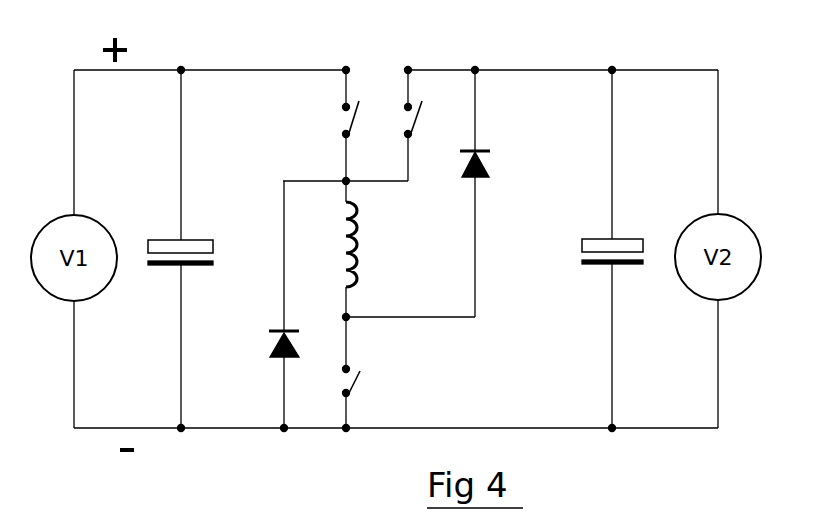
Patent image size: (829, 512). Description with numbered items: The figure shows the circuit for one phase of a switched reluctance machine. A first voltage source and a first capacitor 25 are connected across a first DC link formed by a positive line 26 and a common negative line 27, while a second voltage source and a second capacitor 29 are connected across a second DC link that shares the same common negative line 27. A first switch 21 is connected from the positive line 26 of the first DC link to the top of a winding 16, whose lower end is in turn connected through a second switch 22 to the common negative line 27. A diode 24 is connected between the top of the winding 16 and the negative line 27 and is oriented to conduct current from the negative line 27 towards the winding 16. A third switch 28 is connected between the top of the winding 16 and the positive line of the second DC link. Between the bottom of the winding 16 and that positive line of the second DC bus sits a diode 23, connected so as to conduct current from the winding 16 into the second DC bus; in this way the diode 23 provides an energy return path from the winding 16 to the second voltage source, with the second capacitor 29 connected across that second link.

The winding 16 is at (363, 224).
The first switch 21 is at (342, 125).
The second switch 22 is at (362, 378).
The diode 23 is at (493, 158).
The diode 24 is at (270, 338).
The first capacitor 25 is at (206, 240).
The positive line 26 is at (260, 69).
The common negative line 27 is at (240, 430).
The third switch 28 is at (407, 125).
The second capacitor 29 is at (590, 240).